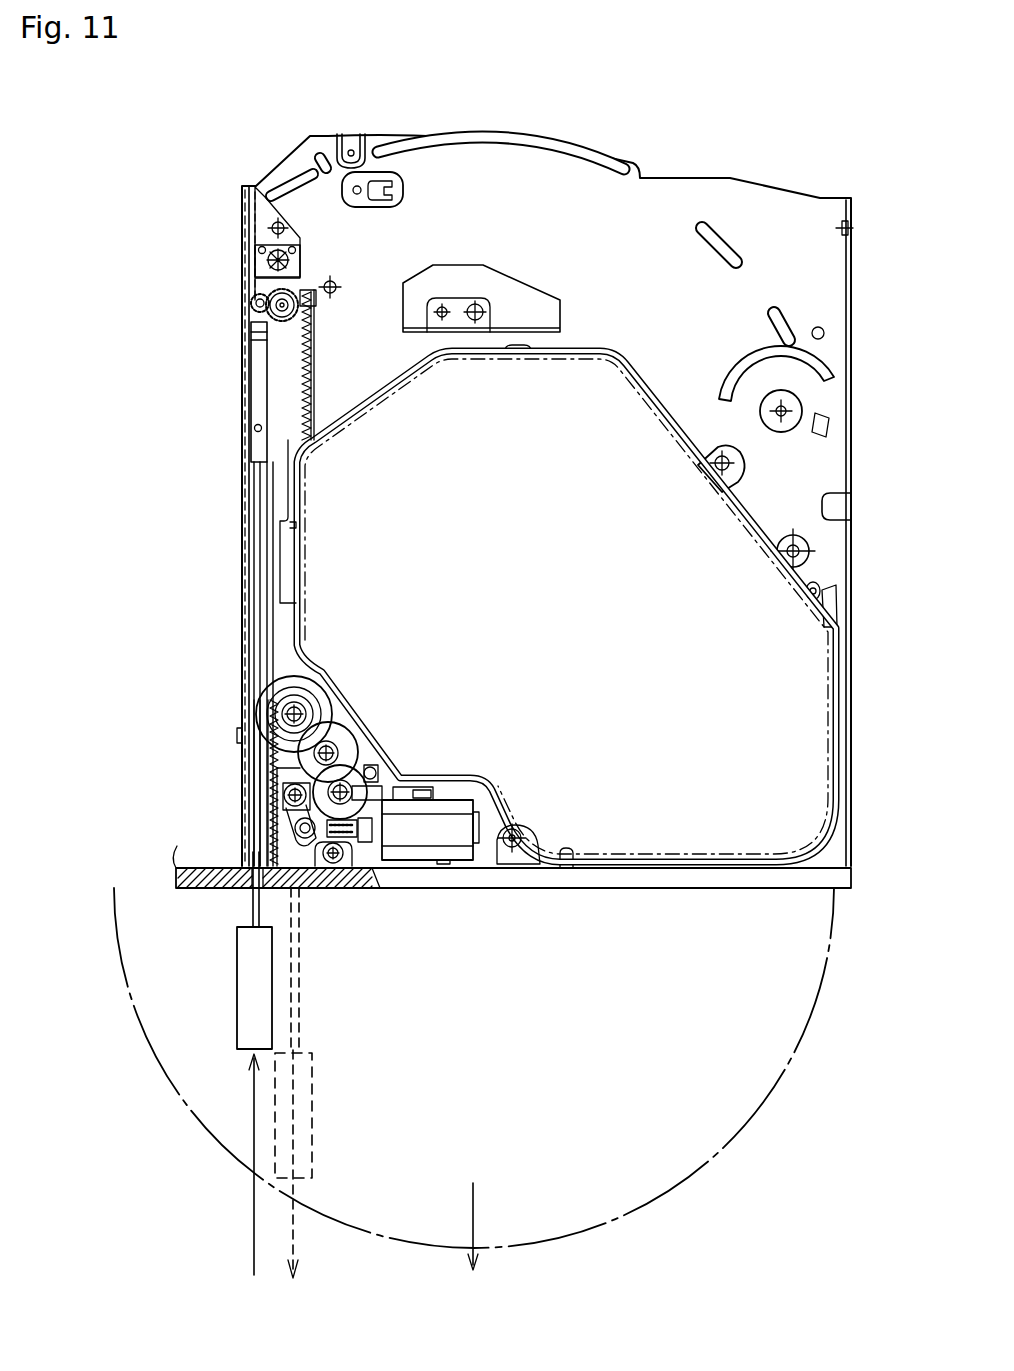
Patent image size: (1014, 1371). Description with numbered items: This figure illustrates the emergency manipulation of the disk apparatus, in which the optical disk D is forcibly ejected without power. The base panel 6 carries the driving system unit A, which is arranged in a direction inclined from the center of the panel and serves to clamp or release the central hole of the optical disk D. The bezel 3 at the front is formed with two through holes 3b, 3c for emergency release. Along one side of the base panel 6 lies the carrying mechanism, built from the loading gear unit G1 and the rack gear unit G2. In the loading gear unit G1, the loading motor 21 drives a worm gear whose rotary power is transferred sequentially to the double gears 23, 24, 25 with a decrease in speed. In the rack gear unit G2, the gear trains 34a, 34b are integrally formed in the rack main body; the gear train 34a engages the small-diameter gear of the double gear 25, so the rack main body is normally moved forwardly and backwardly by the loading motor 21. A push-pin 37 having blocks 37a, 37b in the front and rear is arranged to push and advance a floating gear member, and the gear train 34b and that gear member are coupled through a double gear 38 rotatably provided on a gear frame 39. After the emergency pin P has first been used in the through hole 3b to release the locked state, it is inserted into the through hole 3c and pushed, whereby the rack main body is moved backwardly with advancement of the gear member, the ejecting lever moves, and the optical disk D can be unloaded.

The base panel 6 is at (792, 270).
The bezel 3 is at (660, 880).
The through hole 3b is at (298, 893).
The through hole 3c is at (253, 890).
The loading motor 21 is at (458, 830).
The double gear 23 is at (360, 770).
The double gear 24 is at (345, 738).
The double gear 25 is at (322, 694).
The gear train 34a is at (278, 792).
The gear train 34b is at (300, 340).
The push-pin 37 is at (258, 616).
The block 37a is at (262, 735).
The block 37b is at (266, 391).
The double gear 38 is at (256, 322).
The gear frame 39 is at (246, 268).
The loading gear unit G1 is at (372, 868).
The rack gear unit G2 is at (290, 377).
The driving system unit A is at (653, 376).
The emergency pin P is at (246, 985).
The optical disk D is at (715, 1170).